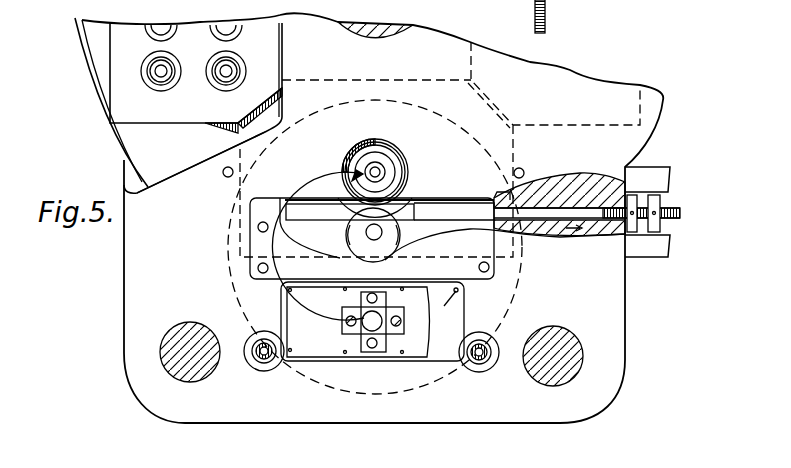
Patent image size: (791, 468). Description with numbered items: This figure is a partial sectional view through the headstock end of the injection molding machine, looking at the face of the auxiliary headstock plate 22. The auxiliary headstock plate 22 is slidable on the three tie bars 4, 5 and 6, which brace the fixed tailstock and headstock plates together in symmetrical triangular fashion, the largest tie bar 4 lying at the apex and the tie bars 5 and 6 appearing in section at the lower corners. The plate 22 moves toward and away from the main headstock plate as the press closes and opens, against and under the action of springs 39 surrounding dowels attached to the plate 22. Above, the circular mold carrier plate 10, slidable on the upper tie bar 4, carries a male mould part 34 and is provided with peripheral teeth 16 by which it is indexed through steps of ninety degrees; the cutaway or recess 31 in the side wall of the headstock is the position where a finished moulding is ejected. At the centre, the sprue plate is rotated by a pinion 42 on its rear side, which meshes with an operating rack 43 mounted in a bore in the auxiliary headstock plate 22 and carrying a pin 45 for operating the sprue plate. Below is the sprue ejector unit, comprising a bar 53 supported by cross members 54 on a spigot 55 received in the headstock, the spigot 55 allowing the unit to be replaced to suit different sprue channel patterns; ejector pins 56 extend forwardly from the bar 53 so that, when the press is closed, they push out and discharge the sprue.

The tie bar 4 is at (361, 35).
The tie bar 5 is at (561, 341).
The tie bar 6 is at (177, 334).
The mold carrier plate 10 is at (92, 58).
The peripheral teeth 16 is at (548, 4).
The auxiliary headstock plate 22 is at (612, 297).
The recess 31 is at (183, 163).
The male mould part 34 is at (193, 40).
The springs 39 is at (264, 368).
The pinion 42 is at (352, 259).
The operating rack 43 is at (411, 213).
The pin 45 is at (382, 233).
The bar 53 is at (454, 307).
The cross members 54 is at (364, 342).
The spigot 55 is at (364, 316).
The ejector pins 56 is at (456, 353).